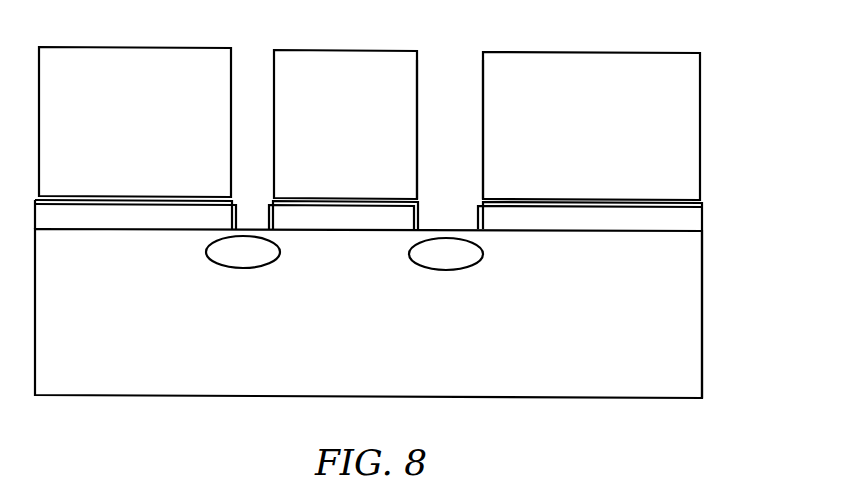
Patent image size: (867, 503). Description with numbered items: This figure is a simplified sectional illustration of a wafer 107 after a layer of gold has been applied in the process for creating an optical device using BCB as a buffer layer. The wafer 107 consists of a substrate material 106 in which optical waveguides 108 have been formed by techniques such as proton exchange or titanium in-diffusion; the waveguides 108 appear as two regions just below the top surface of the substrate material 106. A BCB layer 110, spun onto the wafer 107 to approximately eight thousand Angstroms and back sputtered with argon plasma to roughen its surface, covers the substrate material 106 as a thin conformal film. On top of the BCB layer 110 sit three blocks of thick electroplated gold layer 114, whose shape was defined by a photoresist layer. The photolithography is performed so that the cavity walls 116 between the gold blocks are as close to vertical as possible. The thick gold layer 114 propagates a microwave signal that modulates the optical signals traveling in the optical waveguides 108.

The substrate material 106 is at (368, 335).
The wafer 107 is at (746, 314).
The optical waveguides 108 is at (334, 274).
The BCB layer 110 is at (416, 212).
The gold layer 114 is at (415, 123).
The cavity walls 116 is at (459, 100).